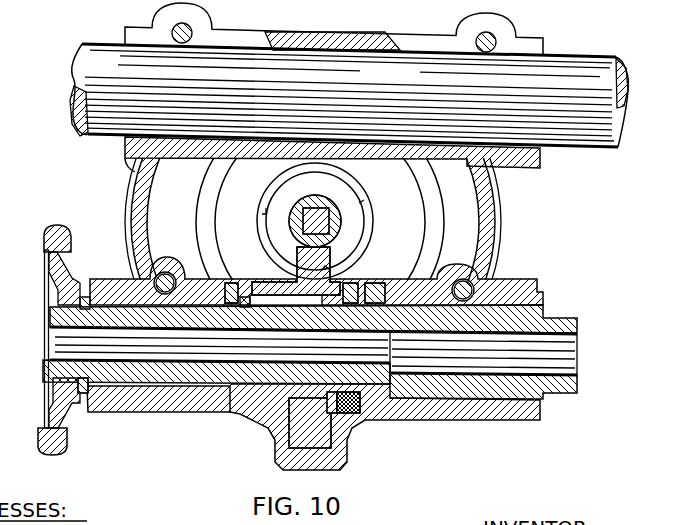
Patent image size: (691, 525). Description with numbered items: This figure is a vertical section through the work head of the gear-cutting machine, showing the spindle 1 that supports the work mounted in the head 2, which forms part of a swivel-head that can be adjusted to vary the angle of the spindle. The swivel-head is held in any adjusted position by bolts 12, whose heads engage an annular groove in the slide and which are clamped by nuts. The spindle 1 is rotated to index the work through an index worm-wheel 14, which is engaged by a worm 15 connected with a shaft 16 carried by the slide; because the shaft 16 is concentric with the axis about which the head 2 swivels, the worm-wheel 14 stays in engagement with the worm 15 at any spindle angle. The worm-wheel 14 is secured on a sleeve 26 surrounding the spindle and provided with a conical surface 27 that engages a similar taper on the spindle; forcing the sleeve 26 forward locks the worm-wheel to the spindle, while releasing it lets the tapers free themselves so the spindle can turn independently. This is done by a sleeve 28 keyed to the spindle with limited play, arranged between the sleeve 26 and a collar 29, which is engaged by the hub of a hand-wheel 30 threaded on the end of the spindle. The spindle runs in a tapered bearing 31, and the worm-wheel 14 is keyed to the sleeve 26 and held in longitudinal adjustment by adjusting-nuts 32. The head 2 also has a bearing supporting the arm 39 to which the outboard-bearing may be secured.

The spindle 1 is at (543, 304).
The head 2 is at (495, 221).
The bolts 12 is at (165, 275).
The index worm-wheel 14 is at (292, 440).
The worm 15 is at (345, 217).
The shaft 16 is at (308, 213).
The sleeve 26 is at (260, 293).
The conical surface 27 is at (339, 413).
The sleeve 28 is at (165, 388).
The collar 29 is at (86, 380).
The hand-wheel 30 is at (46, 285).
The tapered bearing 31 is at (468, 421).
The adjusting-nuts 32 is at (239, 287).
The arm 39 is at (584, 61).